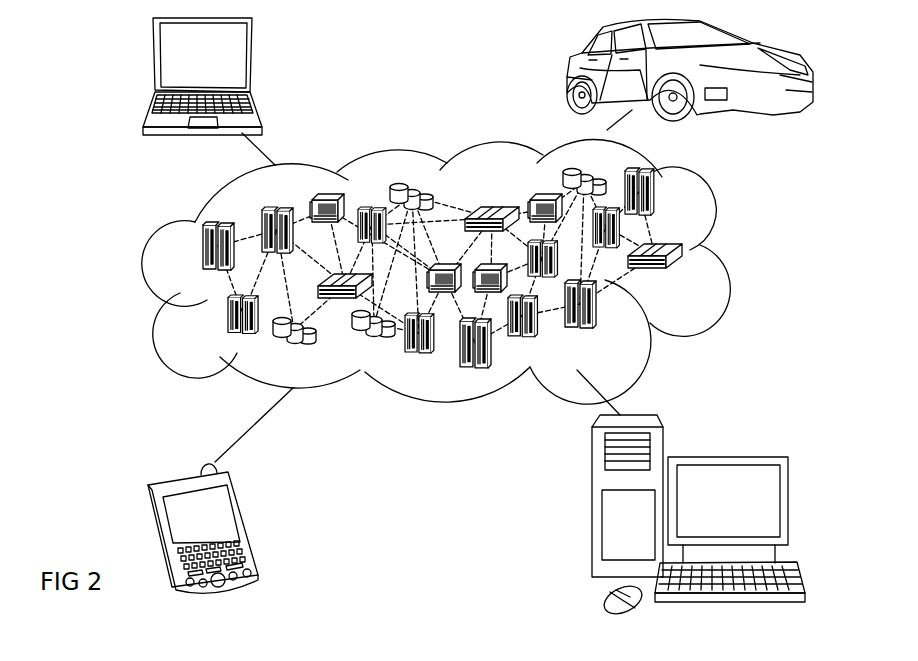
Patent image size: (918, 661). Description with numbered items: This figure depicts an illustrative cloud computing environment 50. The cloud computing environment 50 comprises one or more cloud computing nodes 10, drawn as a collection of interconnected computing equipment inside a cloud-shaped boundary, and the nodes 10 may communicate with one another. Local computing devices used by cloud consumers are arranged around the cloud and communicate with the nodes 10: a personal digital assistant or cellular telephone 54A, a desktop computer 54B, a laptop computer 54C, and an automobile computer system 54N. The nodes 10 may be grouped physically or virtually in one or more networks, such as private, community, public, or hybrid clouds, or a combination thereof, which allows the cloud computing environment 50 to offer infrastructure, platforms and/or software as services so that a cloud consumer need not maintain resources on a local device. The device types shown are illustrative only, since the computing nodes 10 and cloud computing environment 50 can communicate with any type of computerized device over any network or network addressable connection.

The cloud computing node 10 is at (690, 277).
The cloud computing environment 50 is at (725, 250).
The personal digital assistant or cellular telephone 54A is at (248, 523).
The desktop computer 54B is at (725, 457).
The laptop computer 54C is at (252, 60).
The automobile computer system 54N is at (567, 70).